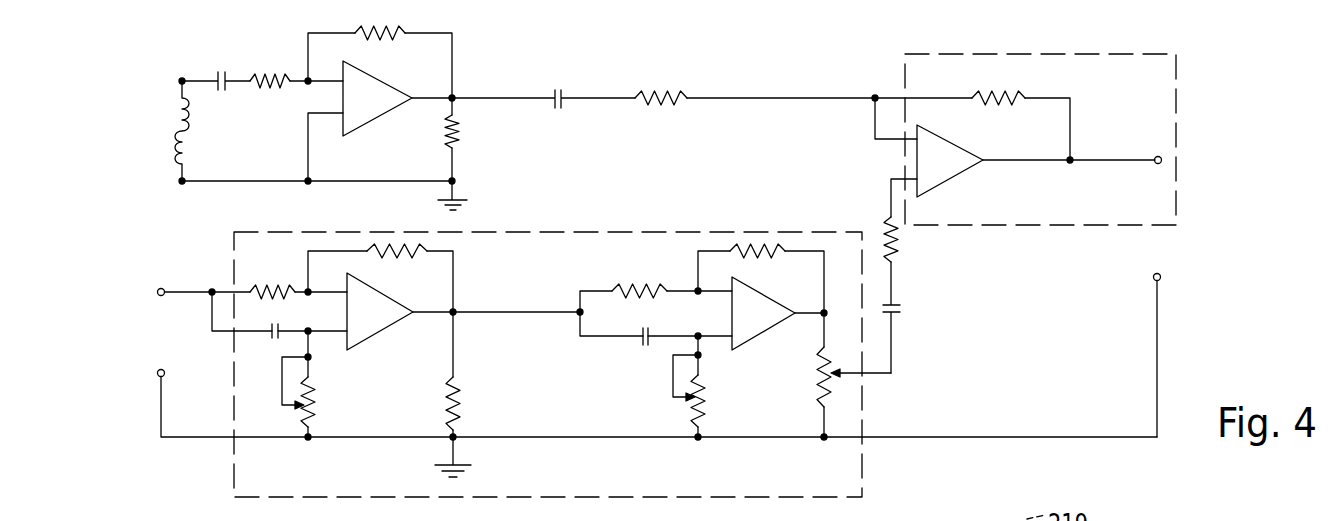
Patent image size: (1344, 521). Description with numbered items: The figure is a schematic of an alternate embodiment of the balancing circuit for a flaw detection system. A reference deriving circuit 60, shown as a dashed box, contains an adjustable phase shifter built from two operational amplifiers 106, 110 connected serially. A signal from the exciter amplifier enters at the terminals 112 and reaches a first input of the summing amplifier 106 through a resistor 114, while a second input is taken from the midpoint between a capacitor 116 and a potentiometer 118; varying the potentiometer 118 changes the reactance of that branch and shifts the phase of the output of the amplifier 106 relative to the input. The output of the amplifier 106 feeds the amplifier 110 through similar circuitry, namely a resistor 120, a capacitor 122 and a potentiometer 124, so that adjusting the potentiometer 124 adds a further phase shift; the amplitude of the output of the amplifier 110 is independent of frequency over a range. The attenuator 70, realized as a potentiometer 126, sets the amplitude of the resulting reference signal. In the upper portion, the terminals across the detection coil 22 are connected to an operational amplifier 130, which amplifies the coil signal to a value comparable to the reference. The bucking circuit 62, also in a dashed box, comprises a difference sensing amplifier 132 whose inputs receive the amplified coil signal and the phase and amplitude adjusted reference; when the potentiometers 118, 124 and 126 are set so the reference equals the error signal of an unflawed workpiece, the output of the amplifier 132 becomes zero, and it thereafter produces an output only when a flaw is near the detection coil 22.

The detection coil 22 is at (171, 143).
The operational amplifier 130 is at (385, 80).
The bucking circuit 62 is at (1176, 138).
The difference sensing amplifier 132 is at (960, 175).
The reference deriving circuit 60 is at (862, 462).
The terminals 112 is at (180, 308).
The resistor 114 is at (282, 288).
The capacitor 116 is at (282, 322).
The operational amplifier 106 is at (385, 291).
The potentiometer 118 is at (318, 390).
The resistor 120 is at (630, 285).
The capacitor 122 is at (640, 346).
The operational amplifier 110 is at (760, 288).
The potentiometer 124 is at (706, 393).
The attenuator 70 is at (853, 419).
The potentiometer 126 is at (810, 378).